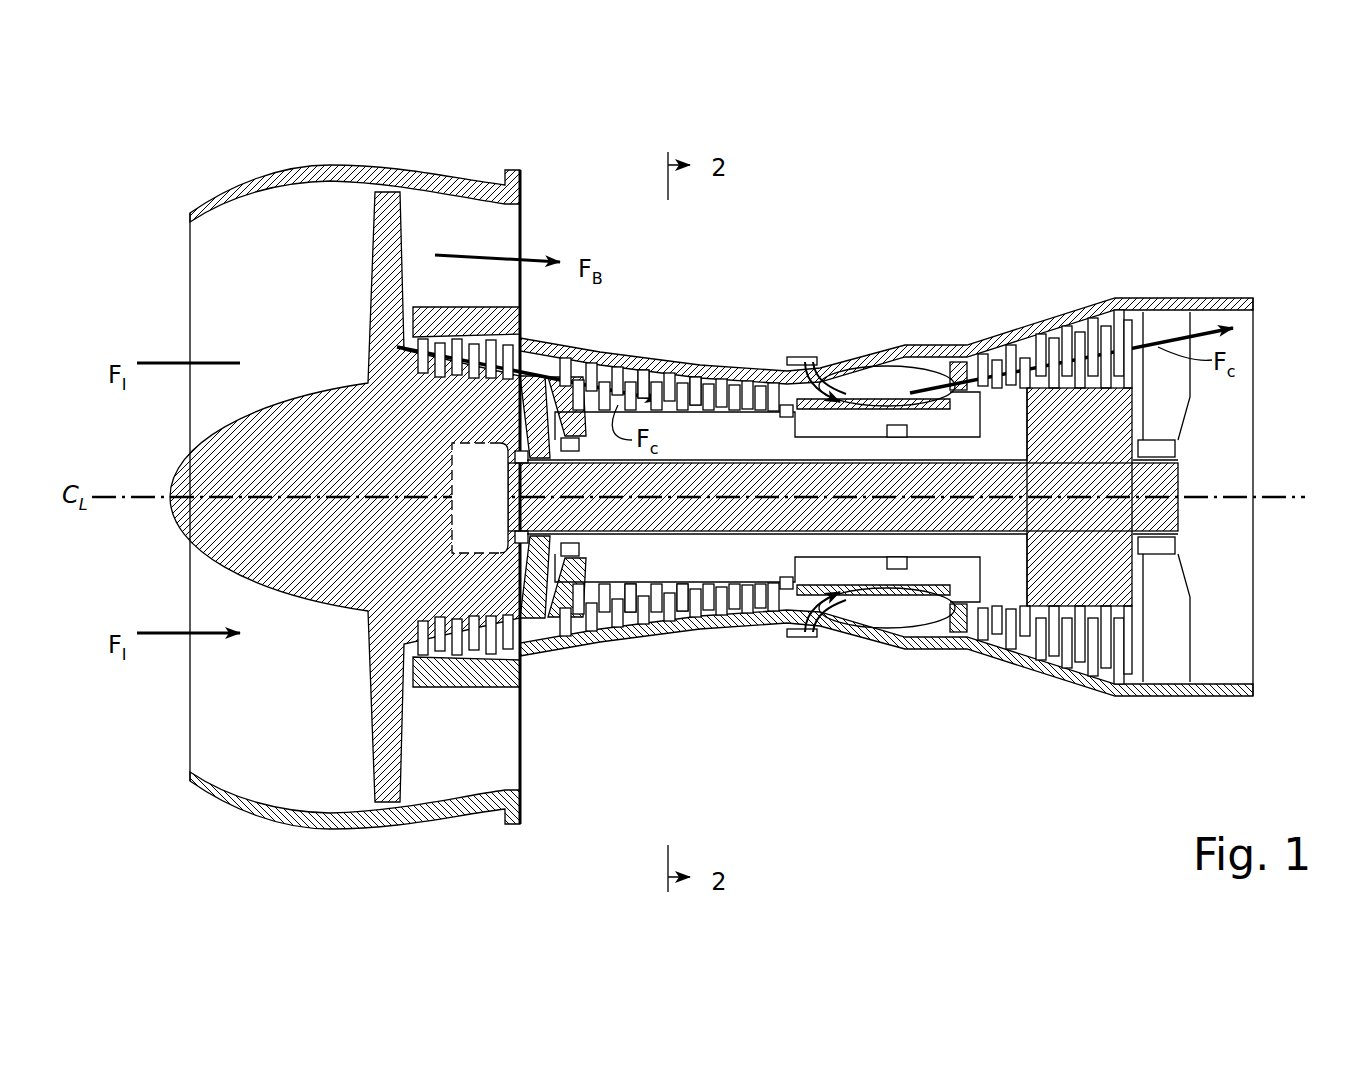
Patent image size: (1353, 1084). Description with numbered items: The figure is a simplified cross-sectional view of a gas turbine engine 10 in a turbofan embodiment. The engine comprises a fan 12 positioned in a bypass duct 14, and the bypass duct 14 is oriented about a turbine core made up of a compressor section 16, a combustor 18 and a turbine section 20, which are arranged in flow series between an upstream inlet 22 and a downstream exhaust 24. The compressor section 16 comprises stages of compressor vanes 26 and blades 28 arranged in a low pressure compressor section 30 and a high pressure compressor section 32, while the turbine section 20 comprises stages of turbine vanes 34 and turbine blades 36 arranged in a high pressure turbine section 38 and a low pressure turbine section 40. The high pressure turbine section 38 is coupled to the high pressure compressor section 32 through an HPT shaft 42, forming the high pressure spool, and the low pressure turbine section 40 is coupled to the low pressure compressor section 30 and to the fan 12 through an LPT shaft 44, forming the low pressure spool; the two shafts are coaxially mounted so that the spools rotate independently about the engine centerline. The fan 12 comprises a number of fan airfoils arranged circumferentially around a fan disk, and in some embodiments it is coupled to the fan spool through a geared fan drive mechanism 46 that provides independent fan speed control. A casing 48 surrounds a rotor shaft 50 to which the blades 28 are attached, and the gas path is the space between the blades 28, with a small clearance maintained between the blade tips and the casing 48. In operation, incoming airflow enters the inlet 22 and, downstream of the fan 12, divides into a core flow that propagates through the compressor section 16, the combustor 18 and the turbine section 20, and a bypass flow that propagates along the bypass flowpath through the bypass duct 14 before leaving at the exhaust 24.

The gas turbine engine 10 is at (1212, 155).
The fan 12 is at (383, 330).
The bypass duct 14 is at (508, 222).
The compressor section 16 is at (700, 760).
The combustor 18 is at (883, 390).
The turbine section 20 is at (1013, 743).
The inlet 22 is at (157, 302).
The exhaust 24 is at (1235, 425).
The compressor vanes 26 is at (701, 398).
The blades 28 is at (683, 597).
The low pressure compressor section 30 is at (410, 693).
The high pressure compressor section 32 is at (570, 643).
The turbine vanes 34 is at (970, 367).
The turbine blades 36 is at (980, 367).
The high pressure turbine section 38 is at (1018, 665).
The low pressure turbine section 40 is at (1137, 700).
The HPT shaft 42 is at (893, 448).
The LPT shaft 44 is at (1170, 507).
The geared fan drive mechanism 46 is at (463, 510).
The casing 48 is at (653, 370).
The rotor shaft 50 is at (730, 430).